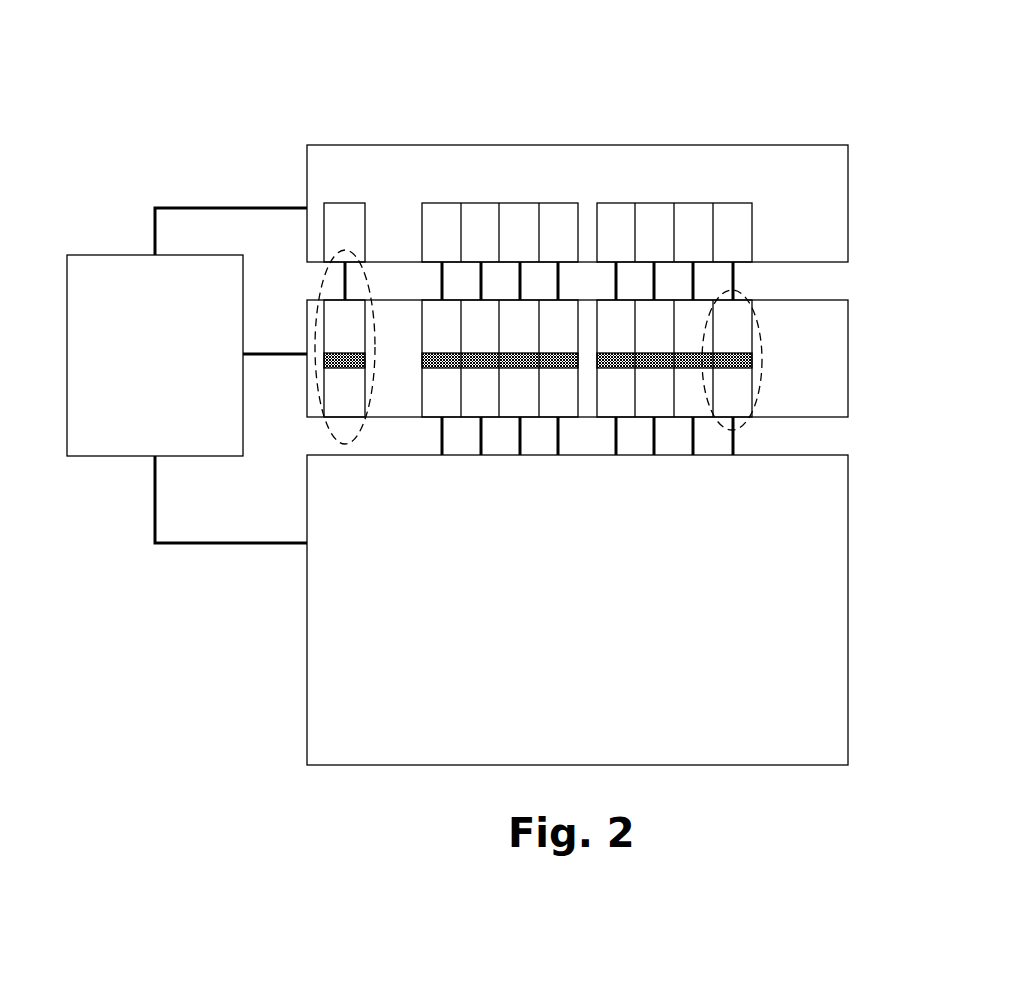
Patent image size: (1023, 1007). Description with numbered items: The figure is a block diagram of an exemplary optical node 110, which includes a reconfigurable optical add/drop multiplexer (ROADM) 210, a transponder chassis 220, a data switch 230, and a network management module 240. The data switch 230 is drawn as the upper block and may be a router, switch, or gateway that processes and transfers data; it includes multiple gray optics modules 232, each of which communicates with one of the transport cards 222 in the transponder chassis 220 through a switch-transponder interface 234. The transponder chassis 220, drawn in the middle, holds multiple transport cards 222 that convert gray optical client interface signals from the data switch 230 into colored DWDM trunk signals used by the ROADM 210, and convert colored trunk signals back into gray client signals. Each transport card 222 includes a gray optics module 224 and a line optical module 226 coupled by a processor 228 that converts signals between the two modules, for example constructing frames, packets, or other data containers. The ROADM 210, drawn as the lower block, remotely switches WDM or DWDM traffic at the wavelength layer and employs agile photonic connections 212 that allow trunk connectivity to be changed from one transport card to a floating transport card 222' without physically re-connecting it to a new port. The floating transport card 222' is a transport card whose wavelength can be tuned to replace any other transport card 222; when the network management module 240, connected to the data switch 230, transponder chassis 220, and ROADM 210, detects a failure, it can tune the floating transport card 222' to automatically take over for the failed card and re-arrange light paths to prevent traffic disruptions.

The optical node 110 is at (178, 112).
The reconfigurable optical add/drop multiplexer (ROADM) 210 is at (561, 635).
The agile photonic connections 212 is at (737, 450).
The transponder chassis 220 is at (381, 328).
The transport card 222 is at (852, 381).
The floating transport card 222' is at (393, 237).
The gray optics module 224 is at (745, 325).
The line optical module 226 is at (750, 390).
The processor 228 is at (750, 360).
The data switch 230 is at (513, 176).
The gray optics module 232 is at (745, 223).
The switch-transponder interface 234 is at (735, 273).
The network management module 240 is at (138, 401).